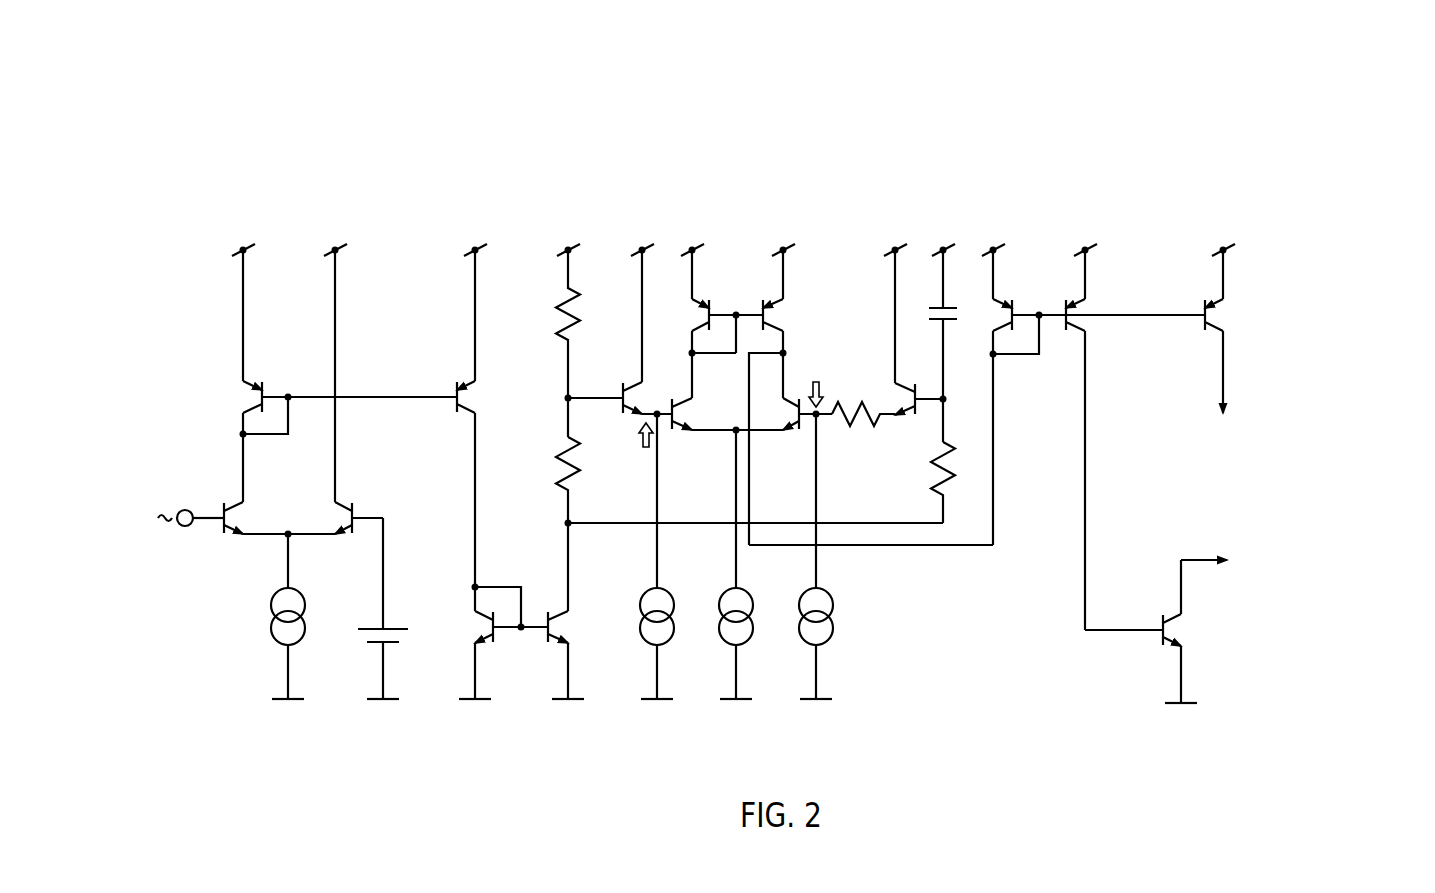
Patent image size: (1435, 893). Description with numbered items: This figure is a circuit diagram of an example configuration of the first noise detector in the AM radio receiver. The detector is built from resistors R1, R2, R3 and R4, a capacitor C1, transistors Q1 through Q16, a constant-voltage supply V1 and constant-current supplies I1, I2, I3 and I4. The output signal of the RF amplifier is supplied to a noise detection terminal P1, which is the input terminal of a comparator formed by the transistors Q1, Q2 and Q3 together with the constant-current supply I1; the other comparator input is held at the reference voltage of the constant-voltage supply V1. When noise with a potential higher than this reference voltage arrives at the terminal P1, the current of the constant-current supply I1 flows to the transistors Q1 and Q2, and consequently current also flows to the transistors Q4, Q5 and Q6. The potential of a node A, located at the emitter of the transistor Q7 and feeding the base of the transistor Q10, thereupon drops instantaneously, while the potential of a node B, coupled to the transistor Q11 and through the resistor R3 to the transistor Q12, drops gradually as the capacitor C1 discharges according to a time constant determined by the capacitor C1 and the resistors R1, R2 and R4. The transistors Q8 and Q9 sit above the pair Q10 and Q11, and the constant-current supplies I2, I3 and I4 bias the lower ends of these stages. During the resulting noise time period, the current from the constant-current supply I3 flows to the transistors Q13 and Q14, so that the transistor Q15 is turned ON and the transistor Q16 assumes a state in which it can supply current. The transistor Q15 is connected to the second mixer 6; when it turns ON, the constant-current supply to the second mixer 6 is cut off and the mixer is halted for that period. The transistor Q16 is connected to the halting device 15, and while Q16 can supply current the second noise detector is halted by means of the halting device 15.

The transistor Q1 is at (335, 376).
The transistor Q2 is at (279, 520).
The transistor Q3 is at (347, 392).
The transistor Q4 is at (491, 440).
The transistor Q5 is at (499, 655).
The transistor Q6 is at (570, 655).
The transistor Q7 is at (620, 334).
The transistor Q8 is at (715, 324).
The transistor Q9 is at (871, 397).
The transistor Q10 is at (727, 416).
The transistor Q11 is at (792, 414).
The transistor Q12 is at (902, 332).
The transistor Q13 is at (1098, 397).
The transistor Q14 is at (1114, 440).
The transistor Q15 is at (1195, 631).
The transistor Q16 is at (1232, 331).
The resistor R1 is at (551, 343).
The resistor R2 is at (732, 524).
The resistor R3 is at (863, 431).
The resistor R4 is at (929, 482).
The capacitor C1 is at (933, 346).
The constant-current supply I1 is at (299, 616).
The constant-current supply I2 is at (668, 556).
The constant-current supply I3 is at (746, 564).
The constant-current supply I4 is at (826, 556).
The constant-voltage supply V1 is at (387, 608).
The noise detection terminal P1 is at (176, 520).
The node A is at (646, 448).
The node B is at (816, 384).
The halting device 15 is at (1287, 393).
The second mixer 6 is at (1326, 573).